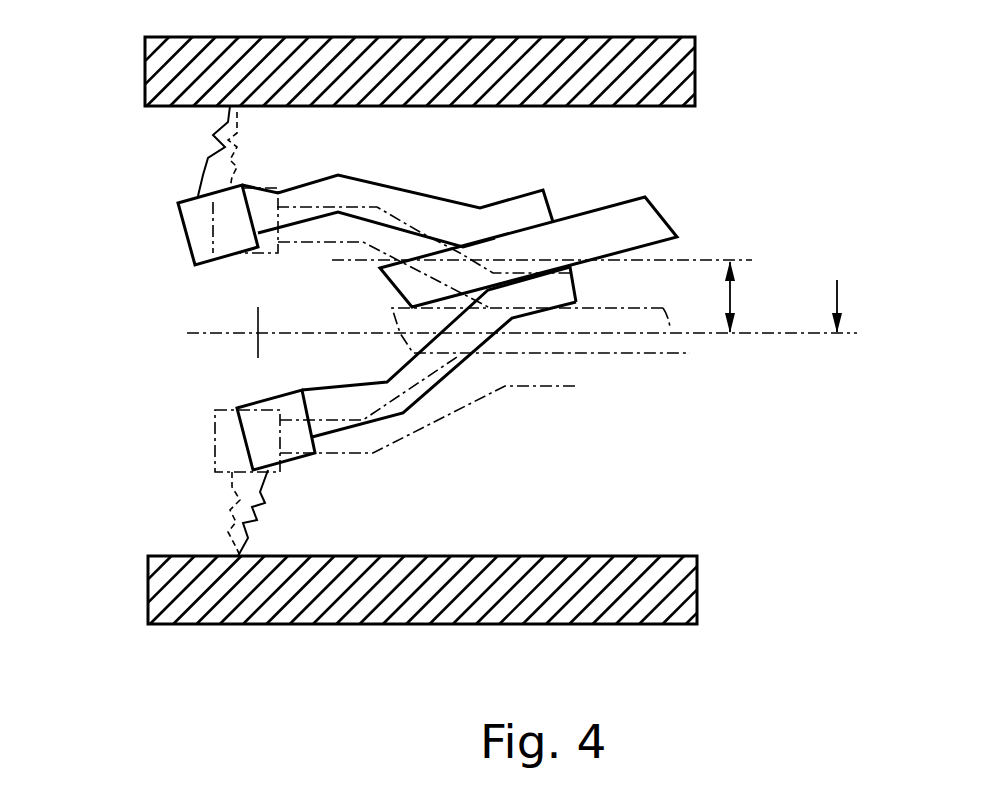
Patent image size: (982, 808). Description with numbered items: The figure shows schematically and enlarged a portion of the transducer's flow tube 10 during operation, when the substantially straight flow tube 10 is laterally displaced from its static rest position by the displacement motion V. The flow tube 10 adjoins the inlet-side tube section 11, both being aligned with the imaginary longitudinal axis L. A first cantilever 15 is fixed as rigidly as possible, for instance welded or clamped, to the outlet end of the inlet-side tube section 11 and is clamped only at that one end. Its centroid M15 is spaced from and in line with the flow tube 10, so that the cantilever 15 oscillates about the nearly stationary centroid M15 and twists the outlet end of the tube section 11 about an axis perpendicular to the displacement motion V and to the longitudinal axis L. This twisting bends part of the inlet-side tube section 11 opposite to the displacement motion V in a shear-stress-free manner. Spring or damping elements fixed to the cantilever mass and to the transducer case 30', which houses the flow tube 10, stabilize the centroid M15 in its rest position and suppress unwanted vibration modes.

The transducer case 30' is at (374, 330).
The flow tube 10 is at (640, 222).
The inlet-side tube section 11 is at (412, 277).
The first cantilever 15 is at (290, 407).
The centroid of first cantilever M15 is at (256, 333).
The lateral displacement motion V is at (742, 297).
The longitudinal axis L is at (834, 290).